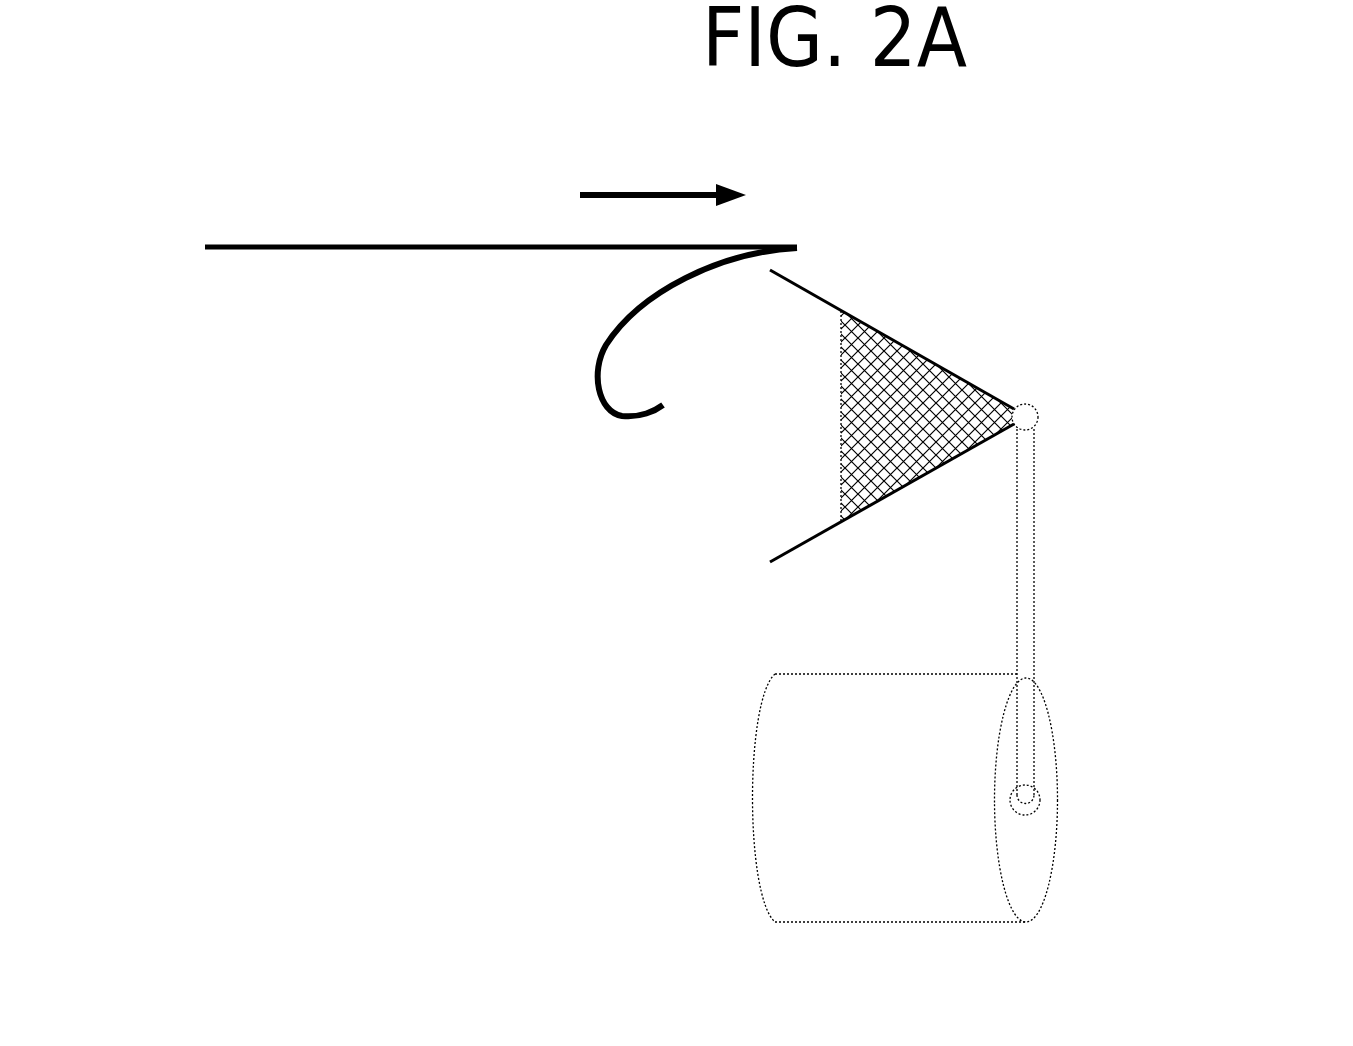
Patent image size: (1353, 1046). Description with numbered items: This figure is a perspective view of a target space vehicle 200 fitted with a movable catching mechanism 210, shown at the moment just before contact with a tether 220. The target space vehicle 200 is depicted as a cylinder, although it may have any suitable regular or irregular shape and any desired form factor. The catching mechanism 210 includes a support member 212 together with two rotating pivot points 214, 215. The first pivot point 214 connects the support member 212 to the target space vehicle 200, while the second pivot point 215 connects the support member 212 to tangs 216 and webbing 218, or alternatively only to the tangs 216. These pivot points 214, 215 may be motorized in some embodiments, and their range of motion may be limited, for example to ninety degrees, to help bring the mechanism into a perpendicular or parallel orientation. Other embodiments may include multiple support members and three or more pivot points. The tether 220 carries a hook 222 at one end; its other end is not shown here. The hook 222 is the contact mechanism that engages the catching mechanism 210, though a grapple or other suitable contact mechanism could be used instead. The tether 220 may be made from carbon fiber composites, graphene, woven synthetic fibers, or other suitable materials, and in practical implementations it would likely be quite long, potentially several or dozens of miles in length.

The target space vehicle 200 is at (678, 692).
The movable catching mechanism 210 is at (1125, 386).
The support member 212 is at (1035, 610).
The rotating pivot point 214 is at (1040, 798).
The rotating pivot point 215 is at (1038, 421).
The tangs 216 is at (893, 338).
The webbing 218 is at (960, 382).
The tether 220 is at (322, 245).
The hook 222 is at (597, 388).